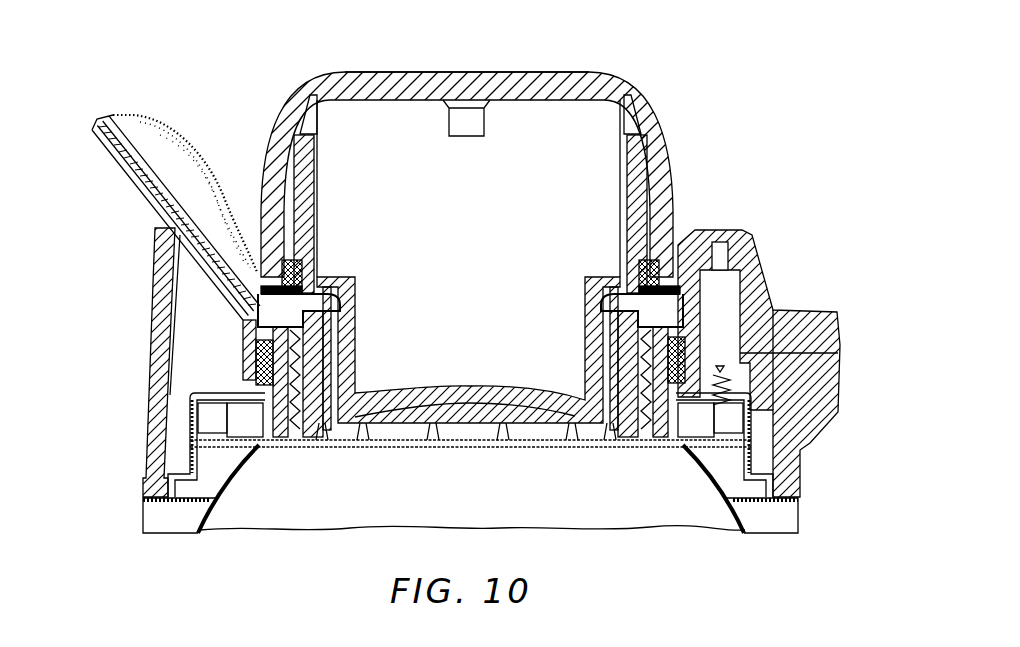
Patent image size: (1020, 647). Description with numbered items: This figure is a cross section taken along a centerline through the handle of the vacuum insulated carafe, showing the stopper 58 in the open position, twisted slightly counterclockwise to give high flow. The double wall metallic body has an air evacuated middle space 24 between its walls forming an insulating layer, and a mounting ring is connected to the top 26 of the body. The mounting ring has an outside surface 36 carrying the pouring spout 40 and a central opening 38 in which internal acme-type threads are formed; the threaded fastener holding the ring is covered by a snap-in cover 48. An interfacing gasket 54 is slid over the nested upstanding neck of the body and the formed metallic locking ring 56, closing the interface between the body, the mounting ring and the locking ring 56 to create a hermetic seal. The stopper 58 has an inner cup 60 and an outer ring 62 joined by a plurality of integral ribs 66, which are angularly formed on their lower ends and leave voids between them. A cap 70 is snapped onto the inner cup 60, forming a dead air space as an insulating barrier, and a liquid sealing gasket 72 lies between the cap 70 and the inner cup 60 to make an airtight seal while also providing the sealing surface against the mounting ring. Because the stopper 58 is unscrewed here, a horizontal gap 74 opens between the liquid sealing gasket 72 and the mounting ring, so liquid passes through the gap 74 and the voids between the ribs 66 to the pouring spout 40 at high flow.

The air evacuated middle space 24 is at (167, 523).
The top 26 is at (235, 400).
The outside surface 36 is at (158, 296).
The central opening 38 is at (605, 410).
The pouring spout 40 is at (131, 116).
The snap-in cover 48 is at (716, 230).
The interfacing gasket 54 is at (247, 367).
The locking ring 56 is at (190, 450).
The stopper 58 is at (506, 66).
The inner cup 60 is at (345, 428).
The outer ring 62 is at (640, 430).
The ribs 66 is at (426, 425).
The cap 70 is at (360, 72).
The liquid sealing gasket 72 is at (265, 290).
The horizontal gap 74 is at (277, 312).